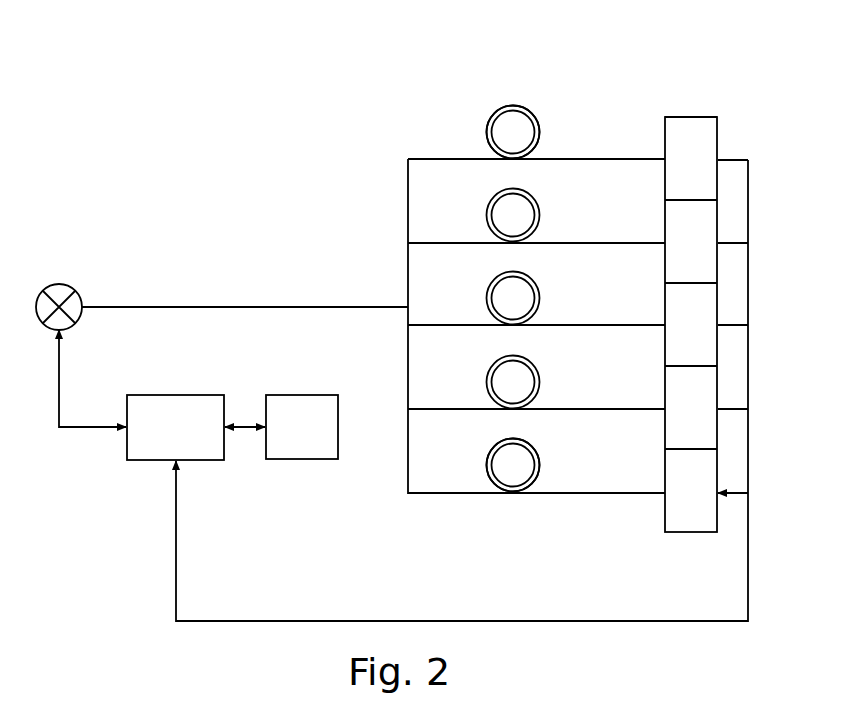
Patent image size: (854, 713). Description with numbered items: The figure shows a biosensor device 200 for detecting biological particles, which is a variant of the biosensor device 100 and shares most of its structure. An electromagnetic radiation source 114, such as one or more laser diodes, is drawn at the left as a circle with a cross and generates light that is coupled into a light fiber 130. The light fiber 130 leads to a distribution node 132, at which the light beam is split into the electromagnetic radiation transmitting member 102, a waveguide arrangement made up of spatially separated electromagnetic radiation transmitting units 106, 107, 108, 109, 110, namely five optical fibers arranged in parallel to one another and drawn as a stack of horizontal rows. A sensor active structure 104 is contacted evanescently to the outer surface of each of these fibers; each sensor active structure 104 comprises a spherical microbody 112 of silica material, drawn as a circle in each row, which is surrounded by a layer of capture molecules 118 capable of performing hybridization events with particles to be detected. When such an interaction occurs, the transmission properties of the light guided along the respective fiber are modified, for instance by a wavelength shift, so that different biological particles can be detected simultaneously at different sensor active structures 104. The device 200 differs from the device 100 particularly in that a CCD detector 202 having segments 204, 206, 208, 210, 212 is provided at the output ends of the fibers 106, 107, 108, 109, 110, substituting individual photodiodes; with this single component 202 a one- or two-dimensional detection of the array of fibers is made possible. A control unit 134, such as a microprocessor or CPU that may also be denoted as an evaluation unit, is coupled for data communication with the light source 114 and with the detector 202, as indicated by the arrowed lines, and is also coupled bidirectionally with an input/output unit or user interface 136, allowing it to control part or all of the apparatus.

The biosensor device 100 is at (186, 217).
The electromagnetic radiation transmitting member 102 is at (306, 306).
The sensor active structure 104 is at (552, 120).
The electromagnetic radiation transmitting unit 106 is at (452, 158).
The electromagnetic radiation transmitting unit 107 is at (452, 241).
The electromagnetic radiation transmitting unit 108 is at (452, 324).
The electromagnetic radiation transmitting unit 109 is at (452, 408).
The electromagnetic radiation transmitting unit 110 is at (452, 492).
The spherical microbody 112 is at (511, 122).
The electromagnetic radiation source 114 is at (58, 284).
The layer of capture molecules 118 is at (488, 120).
The light fiber 130 is at (185, 306).
The distribution node 132 is at (407, 306).
The control unit 134 is at (175, 395).
The user interface 136 is at (298, 395).
The biosensor device 200 is at (524, 38).
The CCD detector 202 is at (698, 100).
The segment 204 is at (707, 136).
The segment 206 is at (707, 220).
The segment 208 is at (707, 304).
The segment 210 is at (707, 388).
The segment 212 is at (707, 472).